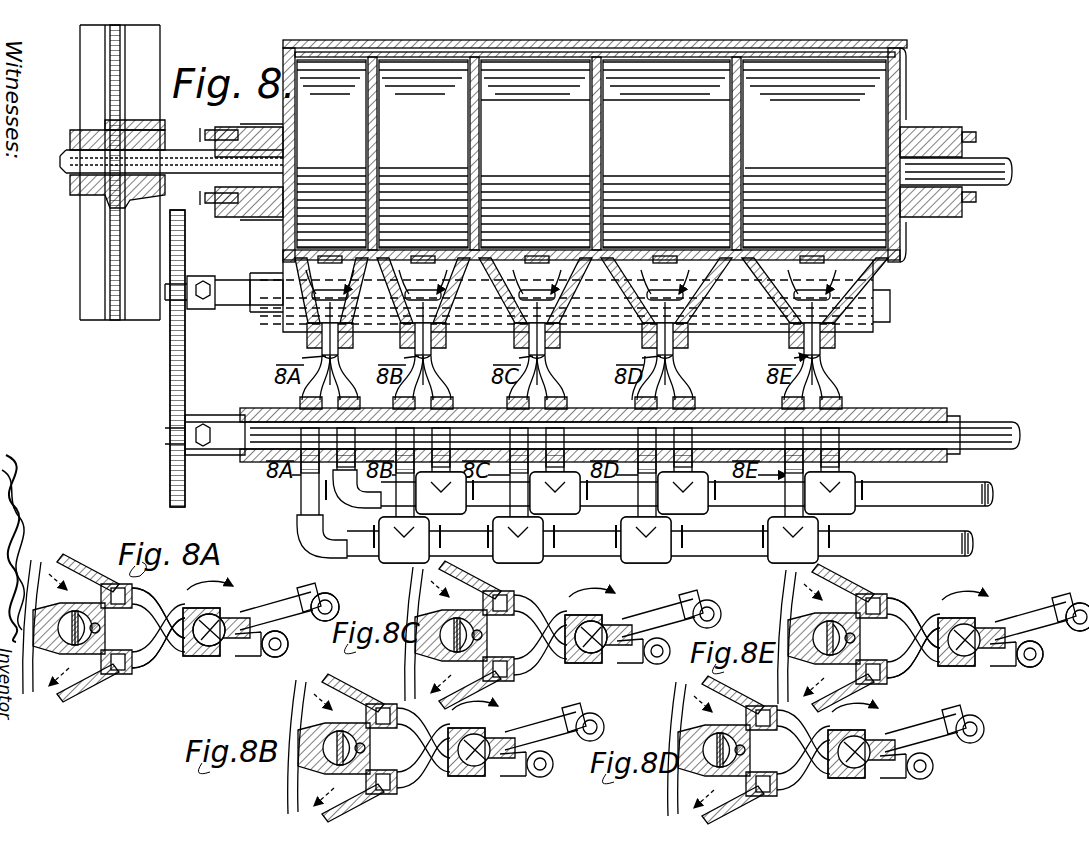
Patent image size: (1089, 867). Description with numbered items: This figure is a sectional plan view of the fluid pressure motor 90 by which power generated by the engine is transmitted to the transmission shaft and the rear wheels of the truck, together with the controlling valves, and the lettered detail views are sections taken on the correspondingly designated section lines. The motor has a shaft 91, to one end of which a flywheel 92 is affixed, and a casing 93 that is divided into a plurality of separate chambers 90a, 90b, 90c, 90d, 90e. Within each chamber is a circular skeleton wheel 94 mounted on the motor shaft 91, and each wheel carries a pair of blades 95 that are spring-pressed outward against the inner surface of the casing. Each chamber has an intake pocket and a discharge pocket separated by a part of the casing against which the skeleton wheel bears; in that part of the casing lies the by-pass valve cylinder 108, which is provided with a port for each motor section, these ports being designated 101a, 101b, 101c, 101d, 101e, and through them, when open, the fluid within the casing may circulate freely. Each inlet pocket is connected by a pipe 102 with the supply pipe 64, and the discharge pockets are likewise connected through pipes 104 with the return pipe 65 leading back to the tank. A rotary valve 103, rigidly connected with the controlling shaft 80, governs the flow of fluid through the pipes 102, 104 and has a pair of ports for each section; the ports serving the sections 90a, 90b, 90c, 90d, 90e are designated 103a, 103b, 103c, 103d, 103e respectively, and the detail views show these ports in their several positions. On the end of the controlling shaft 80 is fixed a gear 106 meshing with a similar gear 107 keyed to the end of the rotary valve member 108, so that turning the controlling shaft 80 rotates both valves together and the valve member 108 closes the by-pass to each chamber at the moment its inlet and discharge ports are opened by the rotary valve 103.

In FIG. 8, the supply pipe 64 is at (962, 492).
In FIG. 8A, the supply pipe 64 is at (285, 650).
In FIG. 8E, the supply pipe 64 is at (1032, 668).
In FIG. 8, the return pipe 65 is at (962, 548).
In FIG. 8A, the return pipe 65 is at (320, 600).
In FIG. 8E, the return pipe 65 is at (1070, 603).
In FIG. 8, the controlling shaft 80 is at (976, 432).
In FIG. 8, the fluid pressure motor 90 is at (903, 108).
In FIG. 8, the motor chamber 90a is at (331, 154).
In FIG. 8, the motor chamber 90b is at (423, 154).
In FIG. 8, the motor chamber 90c is at (535, 154).
In FIG. 8, the motor chamber 90d is at (666, 154).
In FIG. 8, the motor chamber 90e is at (814, 154).
In FIG. 8, the motor shaft 91 is at (982, 164).
In FIG. 8, the flywheel 92 is at (86, 292).
In FIG. 8, the motor casing 93 is at (300, 314).
In FIG. 8, the circular skeleton wheel 94 is at (292, 48).
In FIG. 8, the blade 95 is at (803, 188).
In FIG. 8A, the by-pass port 101a is at (66, 612).
In FIG. 8B, the by-pass port 101b is at (300, 732).
In FIG. 8C, the by-pass port 101c is at (440, 626).
In FIG. 8D, the by-pass port 101d is at (700, 736).
In FIG. 8E, the by-pass port 101e is at (812, 622).
In FIG. 8, the pipe 102 is at (824, 390).
In FIG. 8A, the pipe 102 is at (150, 662).
In FIG. 8E, the pipe 102 is at (912, 668).
In FIG. 8, the rotary valve 103 is at (880, 436).
In FIG. 8A, the rotary valve 103 is at (198, 615).
In FIG. 8C, the rotary valve 103 is at (580, 620).
In FIG. 8A, the valve ports 103a is at (205, 656).
In FIG. 8B, the valve ports 103b is at (466, 776).
In FIG. 8C, the valve ports 103c is at (588, 663).
In FIG. 8D, the valve ports 103d is at (852, 778).
In FIG. 8E, the valve ports 103e is at (970, 666).
In FIG. 8, the pipe 104 is at (793, 388).
In FIG. 8A, the pipe 104 is at (146, 603).
In FIG. 8E, the pipe 104 is at (916, 618).
In FIG. 8, the gear 106 is at (172, 462).
In FIG. 8, the gear 107 is at (172, 322).
In FIG. 8, the by-pass valve cylinder 108 is at (272, 288).
In FIG. 8A, the by-pass valve cylinder 108 is at (100, 670).
In FIG. 8C, the by-pass valve cylinder 108 is at (478, 606).
In FIG. 8D, the by-pass valve cylinder 108 is at (690, 776).